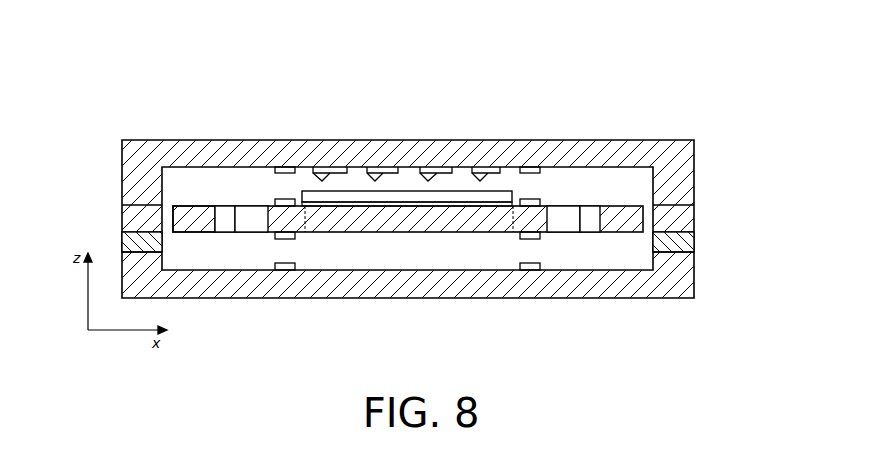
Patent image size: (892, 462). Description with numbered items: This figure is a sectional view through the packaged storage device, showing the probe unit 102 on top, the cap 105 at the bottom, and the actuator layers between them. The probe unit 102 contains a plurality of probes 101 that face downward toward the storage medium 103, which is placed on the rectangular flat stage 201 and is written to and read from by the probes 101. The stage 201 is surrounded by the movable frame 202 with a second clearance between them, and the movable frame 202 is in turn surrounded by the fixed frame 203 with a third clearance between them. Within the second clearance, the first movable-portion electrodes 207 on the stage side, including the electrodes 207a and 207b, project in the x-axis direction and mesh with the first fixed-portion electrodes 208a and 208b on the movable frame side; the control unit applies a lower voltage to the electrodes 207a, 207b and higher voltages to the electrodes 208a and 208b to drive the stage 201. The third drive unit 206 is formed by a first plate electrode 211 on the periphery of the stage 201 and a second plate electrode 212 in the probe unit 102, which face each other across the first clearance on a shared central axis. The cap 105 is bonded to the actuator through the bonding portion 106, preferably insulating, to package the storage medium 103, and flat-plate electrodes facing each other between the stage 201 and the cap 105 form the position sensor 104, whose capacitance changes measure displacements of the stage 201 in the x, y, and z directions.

The probe 101 is at (380, 170).
The probe unit 102 is at (675, 153).
The storage medium 103 is at (398, 200).
The position sensor 104 is at (533, 239).
The cap 105 is at (677, 285).
The bonding portion 106 is at (675, 245).
The stage 201 is at (359, 220).
The movable frame 202 is at (187, 218).
The fixed frame 203 is at (125, 218).
The third drive unit 206 is at (486, 127).
The first movable-portion electrode 207 is at (303, 233).
The first movable-portion electrode 207a is at (563, 205).
The first movable-portion electrode 207b is at (257, 213).
The first fixed-portion electrode 208a is at (596, 208).
The first fixed-portion electrode 208b is at (222, 213).
The first plate electrode 211 is at (520, 167).
The second plate electrode 212 is at (535, 203).